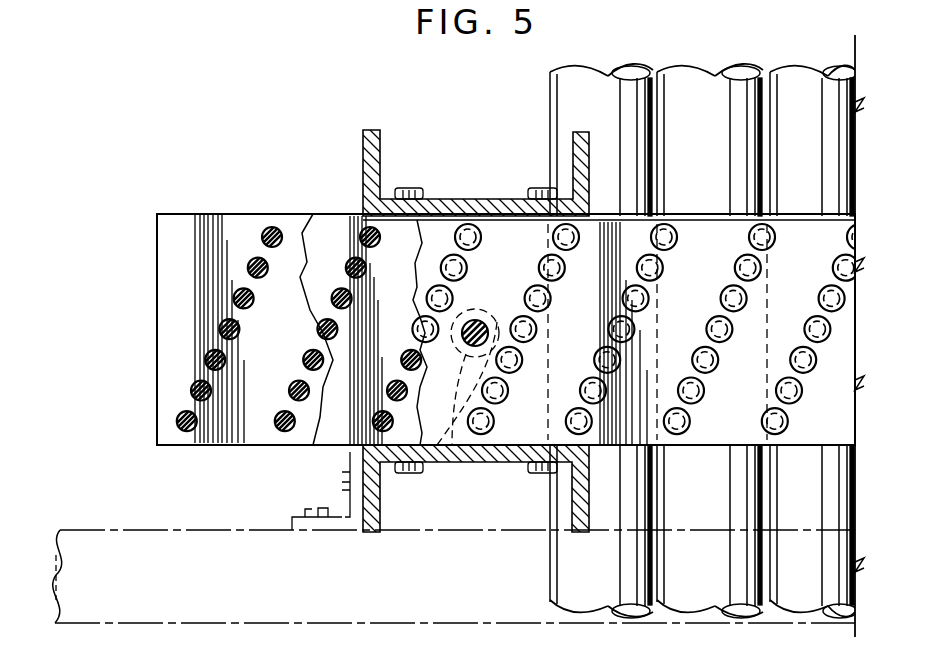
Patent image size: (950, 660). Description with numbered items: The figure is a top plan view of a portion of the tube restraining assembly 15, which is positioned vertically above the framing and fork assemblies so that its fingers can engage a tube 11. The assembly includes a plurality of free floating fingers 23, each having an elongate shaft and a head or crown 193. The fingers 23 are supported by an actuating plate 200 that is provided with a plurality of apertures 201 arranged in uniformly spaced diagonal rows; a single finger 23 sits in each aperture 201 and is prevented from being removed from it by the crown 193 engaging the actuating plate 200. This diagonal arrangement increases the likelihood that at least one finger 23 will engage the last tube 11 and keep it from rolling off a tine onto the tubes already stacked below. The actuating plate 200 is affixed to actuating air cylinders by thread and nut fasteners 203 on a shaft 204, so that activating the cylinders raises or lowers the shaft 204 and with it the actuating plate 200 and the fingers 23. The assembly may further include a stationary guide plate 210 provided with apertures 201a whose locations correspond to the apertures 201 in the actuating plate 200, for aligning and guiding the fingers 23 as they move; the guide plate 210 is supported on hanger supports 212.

The tube restraining assembly 15 is at (197, 137).
The tube 11 is at (605, 88).
The free floating finger 23 is at (481, 220).
The crown 193 is at (466, 291).
The actuating plate 200 is at (313, 214).
The aperture 201 is at (348, 212).
The aperture 201a is at (205, 353).
The thread and nut fastener 203 is at (462, 468).
The shaft 204 is at (454, 432).
The stationary guide plate 210 is at (172, 259).
The hanger support 212 is at (374, 130).